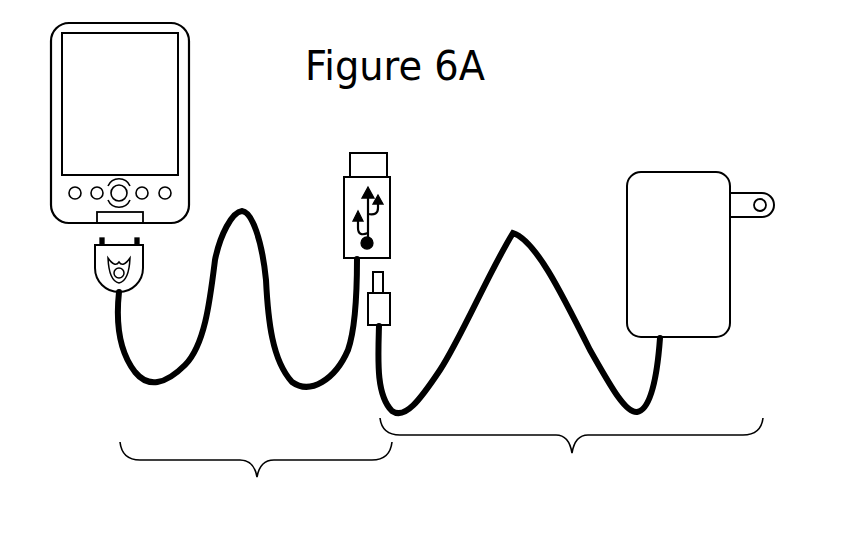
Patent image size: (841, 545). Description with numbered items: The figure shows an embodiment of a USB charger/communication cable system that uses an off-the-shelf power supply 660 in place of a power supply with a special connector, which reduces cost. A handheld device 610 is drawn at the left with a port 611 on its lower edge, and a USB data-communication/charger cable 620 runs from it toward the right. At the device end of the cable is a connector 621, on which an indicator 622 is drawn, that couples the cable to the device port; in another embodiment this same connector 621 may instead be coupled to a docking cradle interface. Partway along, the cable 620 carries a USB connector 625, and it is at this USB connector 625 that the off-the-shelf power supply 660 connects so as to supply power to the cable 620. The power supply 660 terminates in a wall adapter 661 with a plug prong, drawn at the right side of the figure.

The portable electronic device 610 is at (120, 123).
The device connector port 611 is at (118, 215).
The USB data-communication/charger cable 620 is at (255, 358).
The connector 621 is at (145, 268).
The connector indicator 622 is at (115, 276).
The USB connector 625 is at (340, 200).
The off-the-shelf power supply 660 is at (570, 354).
The power adapter 661 is at (700, 254).